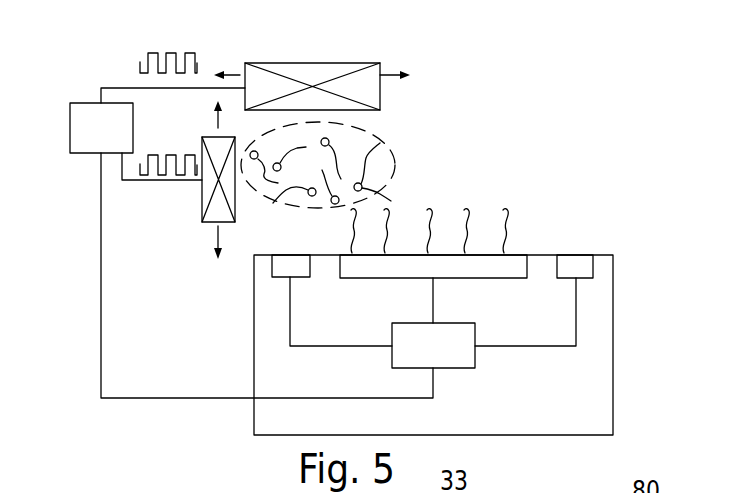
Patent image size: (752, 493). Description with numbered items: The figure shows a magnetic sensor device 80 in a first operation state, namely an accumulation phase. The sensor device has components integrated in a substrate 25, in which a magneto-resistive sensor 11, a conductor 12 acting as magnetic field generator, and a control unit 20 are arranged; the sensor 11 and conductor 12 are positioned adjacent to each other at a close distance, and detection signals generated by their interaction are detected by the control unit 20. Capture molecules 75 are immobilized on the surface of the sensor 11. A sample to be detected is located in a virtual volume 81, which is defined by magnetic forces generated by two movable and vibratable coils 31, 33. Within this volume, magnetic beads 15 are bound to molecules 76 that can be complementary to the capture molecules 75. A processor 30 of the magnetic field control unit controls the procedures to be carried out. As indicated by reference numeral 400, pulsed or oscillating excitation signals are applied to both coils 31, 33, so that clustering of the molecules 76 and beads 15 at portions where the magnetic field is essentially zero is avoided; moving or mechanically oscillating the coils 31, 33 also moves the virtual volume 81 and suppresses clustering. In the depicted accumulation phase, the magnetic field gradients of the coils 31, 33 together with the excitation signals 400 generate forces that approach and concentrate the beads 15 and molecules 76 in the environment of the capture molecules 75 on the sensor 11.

The pulsed excitation signals 400 is at (128, 36).
The processor 30 is at (84, 153).
The coil 31 is at (200, 197).
The coil 33 is at (318, 70).
The sensor device 80 is at (588, 56).
The virtual volume 81 is at (377, 152).
The molecules 76 is at (365, 168).
The magnetic beads 15 is at (372, 184).
The capture molecules 75 is at (468, 214).
The substrate 25 is at (603, 346).
The magneto-resistive sensor 11 is at (503, 273).
The conductor 12 is at (303, 276).
The control unit 20 is at (470, 358).